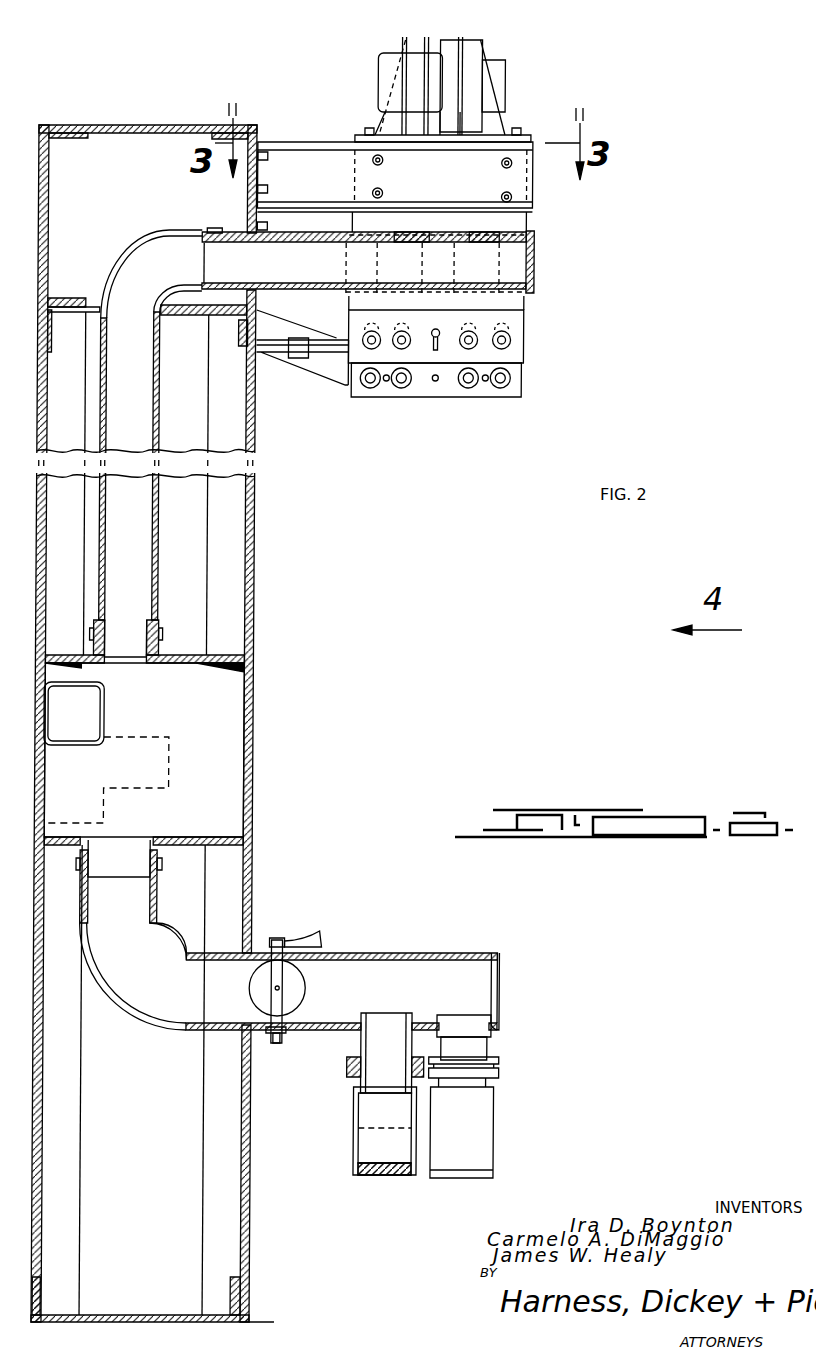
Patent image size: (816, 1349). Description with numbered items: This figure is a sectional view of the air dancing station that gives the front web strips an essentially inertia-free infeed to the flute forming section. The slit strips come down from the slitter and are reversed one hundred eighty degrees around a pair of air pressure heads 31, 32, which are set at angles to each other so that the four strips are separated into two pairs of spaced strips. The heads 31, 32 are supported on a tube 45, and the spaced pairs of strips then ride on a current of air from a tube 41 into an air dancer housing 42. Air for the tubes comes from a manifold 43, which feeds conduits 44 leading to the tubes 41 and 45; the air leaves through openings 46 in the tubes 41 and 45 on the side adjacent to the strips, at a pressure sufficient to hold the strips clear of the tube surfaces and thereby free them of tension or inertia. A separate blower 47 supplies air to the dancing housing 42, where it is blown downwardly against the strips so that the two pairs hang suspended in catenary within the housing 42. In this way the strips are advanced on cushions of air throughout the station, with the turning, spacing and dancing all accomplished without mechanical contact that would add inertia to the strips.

The air pressure head 31 is at (373, 1113).
The air pressure head 32 is at (487, 1108).
The tube 41 is at (535, 255).
The air dancer housing 42 is at (528, 228).
The manifold 43 is at (222, 712).
The conduit 44 is at (143, 548).
The tube 45 is at (440, 955).
The opening 46 is at (390, 240).
The blower 47 is at (436, 40).